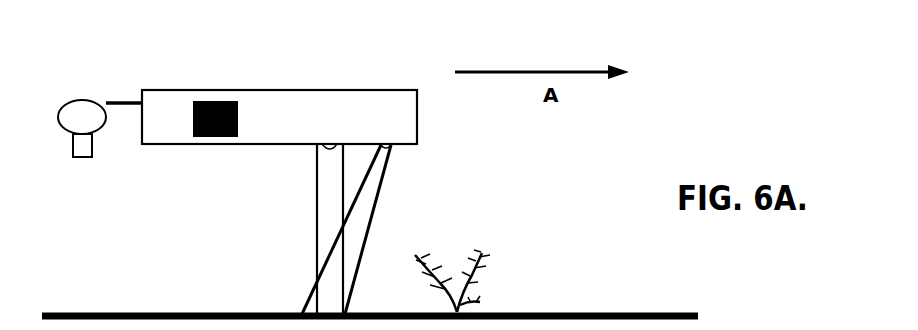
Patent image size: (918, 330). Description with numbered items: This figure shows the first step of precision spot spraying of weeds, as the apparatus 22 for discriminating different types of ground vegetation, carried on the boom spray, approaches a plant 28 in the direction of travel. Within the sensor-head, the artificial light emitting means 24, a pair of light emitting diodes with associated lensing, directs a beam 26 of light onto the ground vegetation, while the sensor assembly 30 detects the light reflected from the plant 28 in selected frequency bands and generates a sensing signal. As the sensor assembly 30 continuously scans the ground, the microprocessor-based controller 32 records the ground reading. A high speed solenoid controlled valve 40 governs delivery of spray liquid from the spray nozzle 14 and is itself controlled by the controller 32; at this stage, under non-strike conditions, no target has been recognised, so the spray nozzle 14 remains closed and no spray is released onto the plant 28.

The spray nozzle 14 is at (92, 150).
The apparatus for discriminating different types of ground vegetation 22 is at (352, 93).
The artificial light emitting means 24 is at (392, 148).
The beam of light 26 is at (368, 200).
The plant 28 is at (490, 257).
The sensor assembly 30 is at (316, 145).
The controller 32 is at (223, 100).
The solenoid controlled valve 40 is at (79, 100).